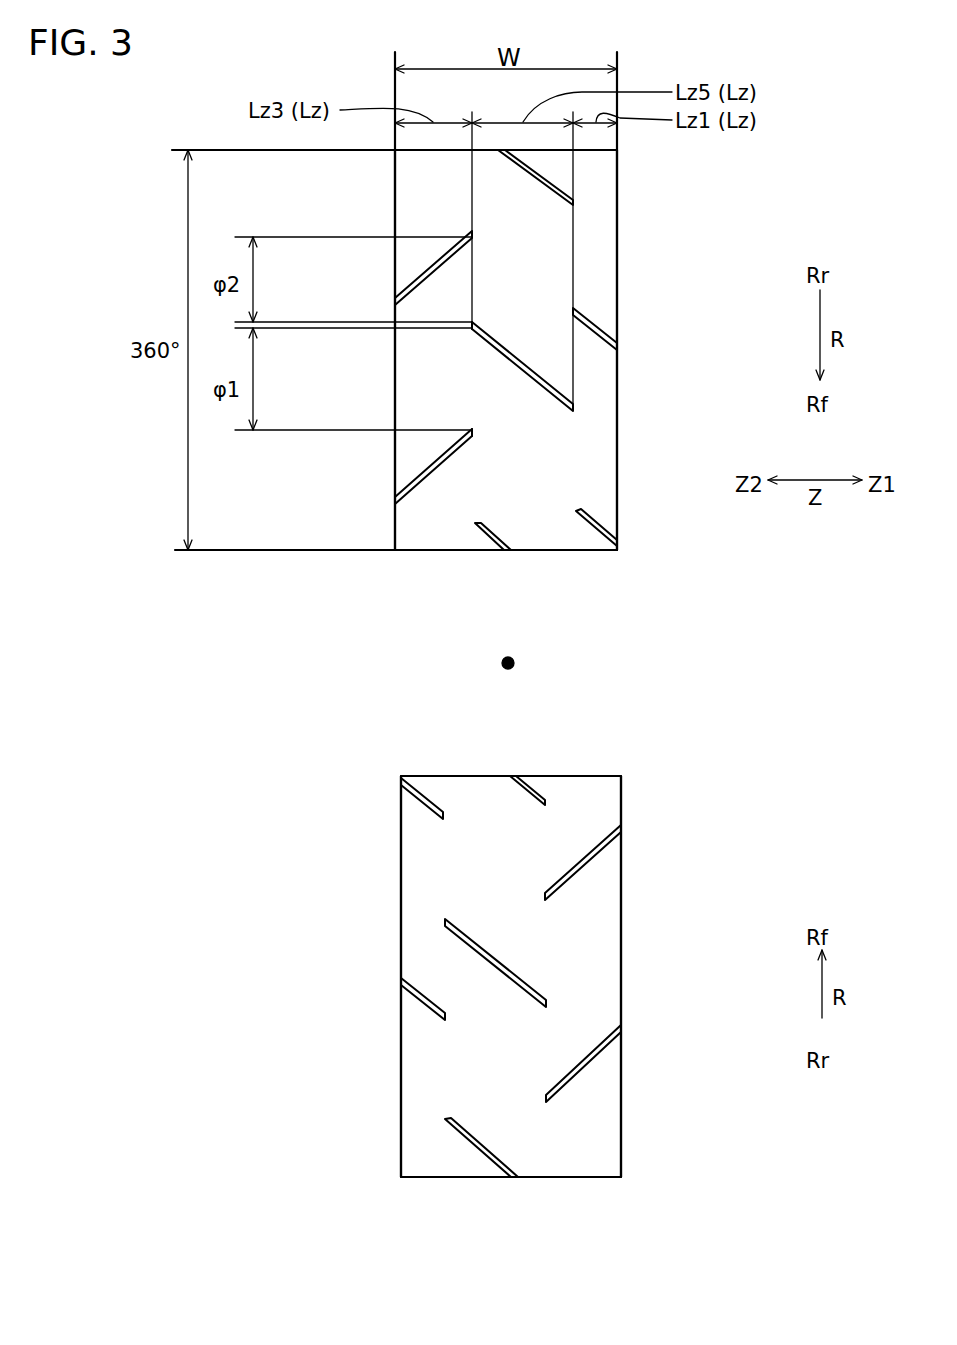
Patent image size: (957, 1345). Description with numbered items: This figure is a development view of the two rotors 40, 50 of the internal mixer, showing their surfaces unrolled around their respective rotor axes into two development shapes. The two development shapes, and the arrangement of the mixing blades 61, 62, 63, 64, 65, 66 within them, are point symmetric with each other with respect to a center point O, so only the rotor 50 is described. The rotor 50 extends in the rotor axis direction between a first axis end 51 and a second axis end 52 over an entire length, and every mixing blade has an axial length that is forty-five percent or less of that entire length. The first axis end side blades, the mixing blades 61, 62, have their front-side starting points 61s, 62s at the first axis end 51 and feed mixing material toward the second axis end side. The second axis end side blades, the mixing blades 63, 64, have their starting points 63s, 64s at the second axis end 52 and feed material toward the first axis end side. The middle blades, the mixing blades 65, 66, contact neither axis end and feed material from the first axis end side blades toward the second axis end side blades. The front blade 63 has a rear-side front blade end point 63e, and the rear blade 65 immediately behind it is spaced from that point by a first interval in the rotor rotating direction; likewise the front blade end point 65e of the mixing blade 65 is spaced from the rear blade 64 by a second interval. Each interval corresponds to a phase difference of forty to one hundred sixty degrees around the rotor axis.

The rotor 40 is at (303, 748).
The rotor 50 is at (300, 578).
The first axis end 51 is at (617, 556).
The second axis end 52 is at (398, 556).
The mixing blade 61 is at (600, 528).
The starting point 61s is at (619, 547).
The mixing blade 62 is at (596, 323).
The starting point 62s is at (618, 346).
The mixing blade 63 is at (427, 470).
The starting point 63s is at (397, 500).
The front blade end point 63e is at (474, 436).
The mixing blade 64 is at (428, 266).
The starting point 64s is at (397, 300).
The mixing blade 65 is at (548, 378).
The front blade end point 65e is at (474, 323).
The mixing blade 66 is at (548, 180).
The center point O is at (515, 665).